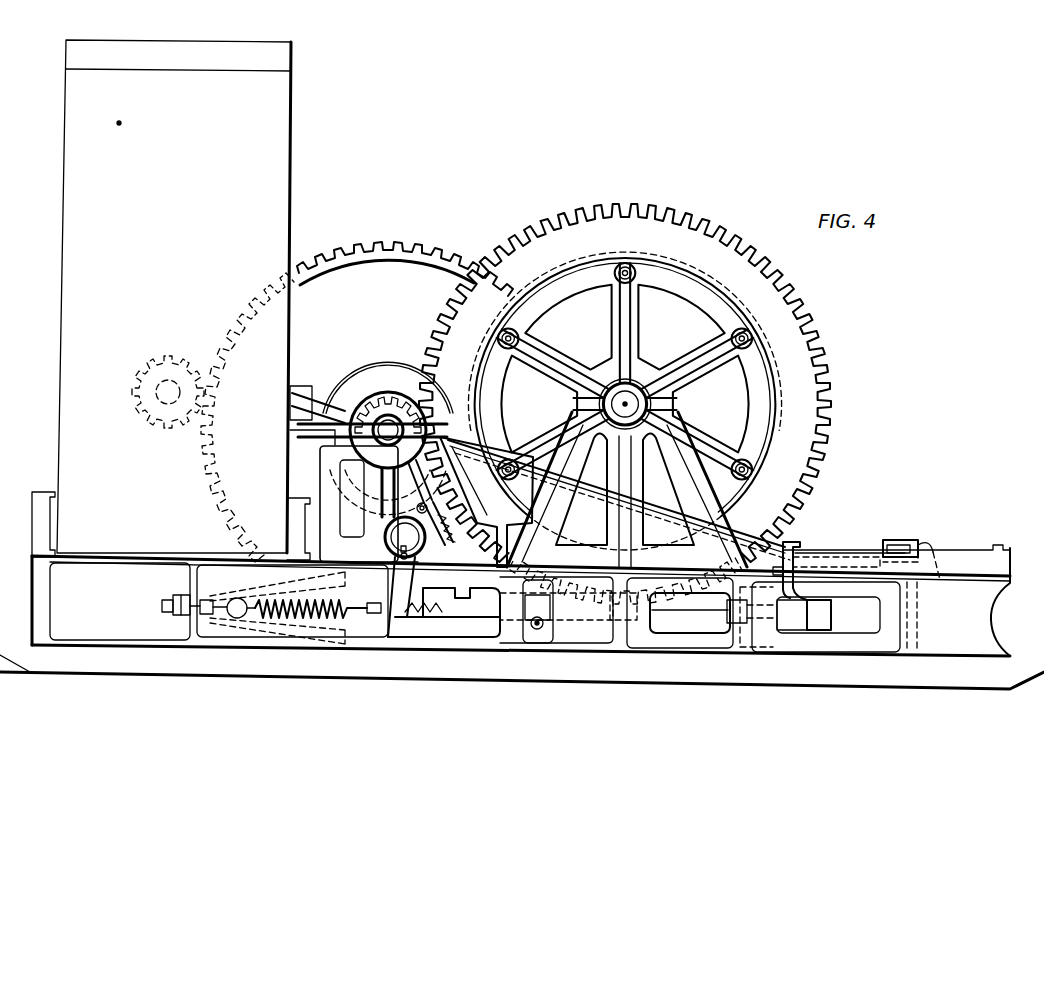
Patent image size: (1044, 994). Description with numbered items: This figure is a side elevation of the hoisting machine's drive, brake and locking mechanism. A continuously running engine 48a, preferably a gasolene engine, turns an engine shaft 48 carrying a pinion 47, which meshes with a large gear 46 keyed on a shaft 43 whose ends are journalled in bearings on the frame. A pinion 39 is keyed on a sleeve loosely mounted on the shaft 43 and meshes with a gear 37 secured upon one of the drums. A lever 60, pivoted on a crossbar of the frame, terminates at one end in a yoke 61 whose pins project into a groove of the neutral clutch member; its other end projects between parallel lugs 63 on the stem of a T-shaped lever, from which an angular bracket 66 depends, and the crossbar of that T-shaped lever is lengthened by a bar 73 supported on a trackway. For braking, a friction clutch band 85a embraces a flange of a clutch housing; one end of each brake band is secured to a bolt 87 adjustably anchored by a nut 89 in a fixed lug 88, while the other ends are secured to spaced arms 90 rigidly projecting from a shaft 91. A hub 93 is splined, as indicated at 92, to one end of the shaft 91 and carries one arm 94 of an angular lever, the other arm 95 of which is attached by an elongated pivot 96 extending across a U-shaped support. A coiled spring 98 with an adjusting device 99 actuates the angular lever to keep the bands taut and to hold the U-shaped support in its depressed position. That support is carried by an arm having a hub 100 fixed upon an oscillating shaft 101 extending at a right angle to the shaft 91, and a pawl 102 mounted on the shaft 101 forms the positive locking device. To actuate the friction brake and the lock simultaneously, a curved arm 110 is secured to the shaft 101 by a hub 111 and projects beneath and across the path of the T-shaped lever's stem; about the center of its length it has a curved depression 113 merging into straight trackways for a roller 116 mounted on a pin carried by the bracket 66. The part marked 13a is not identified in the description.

The continuously running engine 48a is at (278, 143).
The base frame 13a is at (967, 562).
The large gear 46 is at (412, 249).
The pinion 47 is at (177, 357).
The engine shaft 48 is at (165, 389).
The gear 37 is at (787, 287).
The lever 60 is at (657, 510).
The parallel lugs 63 is at (757, 534).
The fixed lug 88 is at (470, 554).
The shaft 43 is at (387, 426).
The pinion 39 is at (398, 392).
The friction clutch band 85a is at (352, 378).
The yoke 61 is at (337, 402).
The bolt 87 is at (446, 534).
The spaced arms 90 is at (395, 540).
The hub 93 is at (395, 560).
The shaft 91 is at (410, 560).
The spline 92 is at (404, 556).
The arm of angular lever 94 is at (423, 580).
The nut 89 is at (445, 562).
The arm of angular lever 95 is at (483, 623).
The elongated pivot 96 is at (543, 632).
The hub 100 is at (547, 600).
The pawl 102 is at (633, 620).
The oscillating shaft 101 is at (713, 610).
The curved arm 110 is at (802, 617).
The hub 111 is at (822, 613).
The adjusting device 99 is at (233, 620).
The coiled spring 98 is at (293, 620).
The angular bracket 66 is at (787, 558).
The curved depression 113 is at (810, 565).
The lengthening bar 73 is at (897, 548).
The roller 116 is at (920, 545).